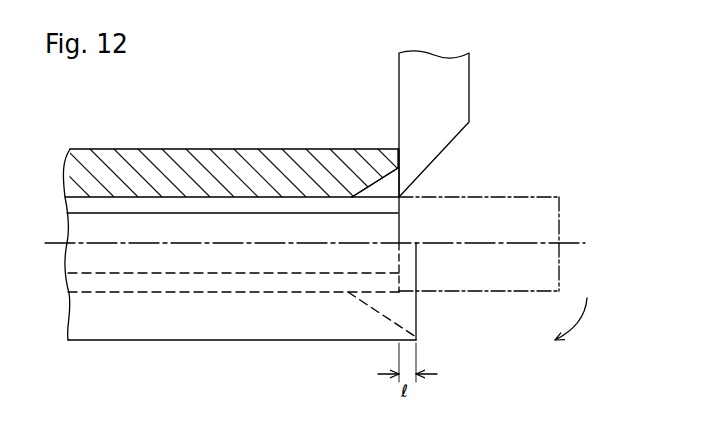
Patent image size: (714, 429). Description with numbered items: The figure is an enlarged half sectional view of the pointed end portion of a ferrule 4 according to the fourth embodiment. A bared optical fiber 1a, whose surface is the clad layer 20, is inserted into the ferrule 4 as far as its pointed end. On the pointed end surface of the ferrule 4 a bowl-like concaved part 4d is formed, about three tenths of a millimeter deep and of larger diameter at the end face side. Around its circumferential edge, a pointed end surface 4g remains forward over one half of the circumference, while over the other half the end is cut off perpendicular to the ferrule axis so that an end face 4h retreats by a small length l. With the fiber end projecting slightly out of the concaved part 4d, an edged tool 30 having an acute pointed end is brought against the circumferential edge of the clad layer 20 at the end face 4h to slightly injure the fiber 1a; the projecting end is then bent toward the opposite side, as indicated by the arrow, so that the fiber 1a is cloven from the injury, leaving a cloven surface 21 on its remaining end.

The optical fiber 1a is at (168, 197).
The ferrule 4 is at (225, 177).
The clad layer 20 is at (277, 205).
The concaved part 4d is at (382, 185).
The end face 4h is at (399, 155).
The edged tool 30 is at (460, 93).
The cloven surface 21 is at (399, 262).
The pointed end surface 4g is at (417, 335).